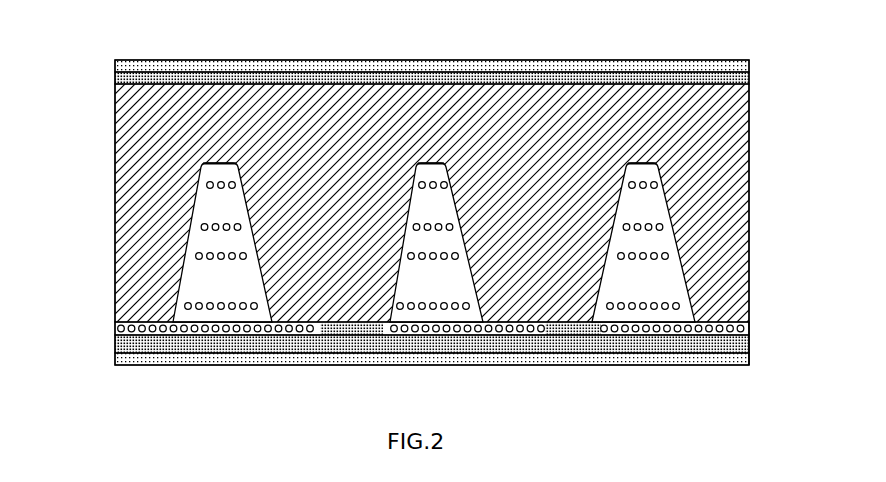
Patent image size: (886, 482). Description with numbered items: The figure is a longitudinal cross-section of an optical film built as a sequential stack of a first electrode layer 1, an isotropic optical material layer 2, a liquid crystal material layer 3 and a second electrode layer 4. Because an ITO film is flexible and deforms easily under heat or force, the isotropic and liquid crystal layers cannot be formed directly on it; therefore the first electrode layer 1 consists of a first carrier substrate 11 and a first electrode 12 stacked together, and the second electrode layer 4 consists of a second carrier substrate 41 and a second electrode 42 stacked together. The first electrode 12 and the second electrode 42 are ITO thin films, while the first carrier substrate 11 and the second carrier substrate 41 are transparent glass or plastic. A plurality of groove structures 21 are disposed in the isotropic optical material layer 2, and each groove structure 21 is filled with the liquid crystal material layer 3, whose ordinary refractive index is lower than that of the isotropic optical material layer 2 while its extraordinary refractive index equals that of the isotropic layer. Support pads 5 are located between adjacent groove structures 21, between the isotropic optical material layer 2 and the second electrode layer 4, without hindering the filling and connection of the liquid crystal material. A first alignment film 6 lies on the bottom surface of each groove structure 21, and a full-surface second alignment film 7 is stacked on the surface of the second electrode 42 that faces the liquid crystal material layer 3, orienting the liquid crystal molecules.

The first electrode layer 1 is at (802, 53).
The first carrier substrate 11 is at (749, 62).
The first electrode 12 is at (749, 80).
The isotropic optical material layer 2 is at (749, 167).
The groove structure 21 is at (194, 208).
The liquid crystal material layer 3 is at (200, 276).
The first alignment film 6 is at (214, 163).
The second electrode layer 4 is at (72, 327).
The second carrier substrate 41 is at (114, 357).
The second electrode 42 is at (114, 353).
The support pad 5 is at (545, 352).
The second alignment film 7 is at (750, 333).